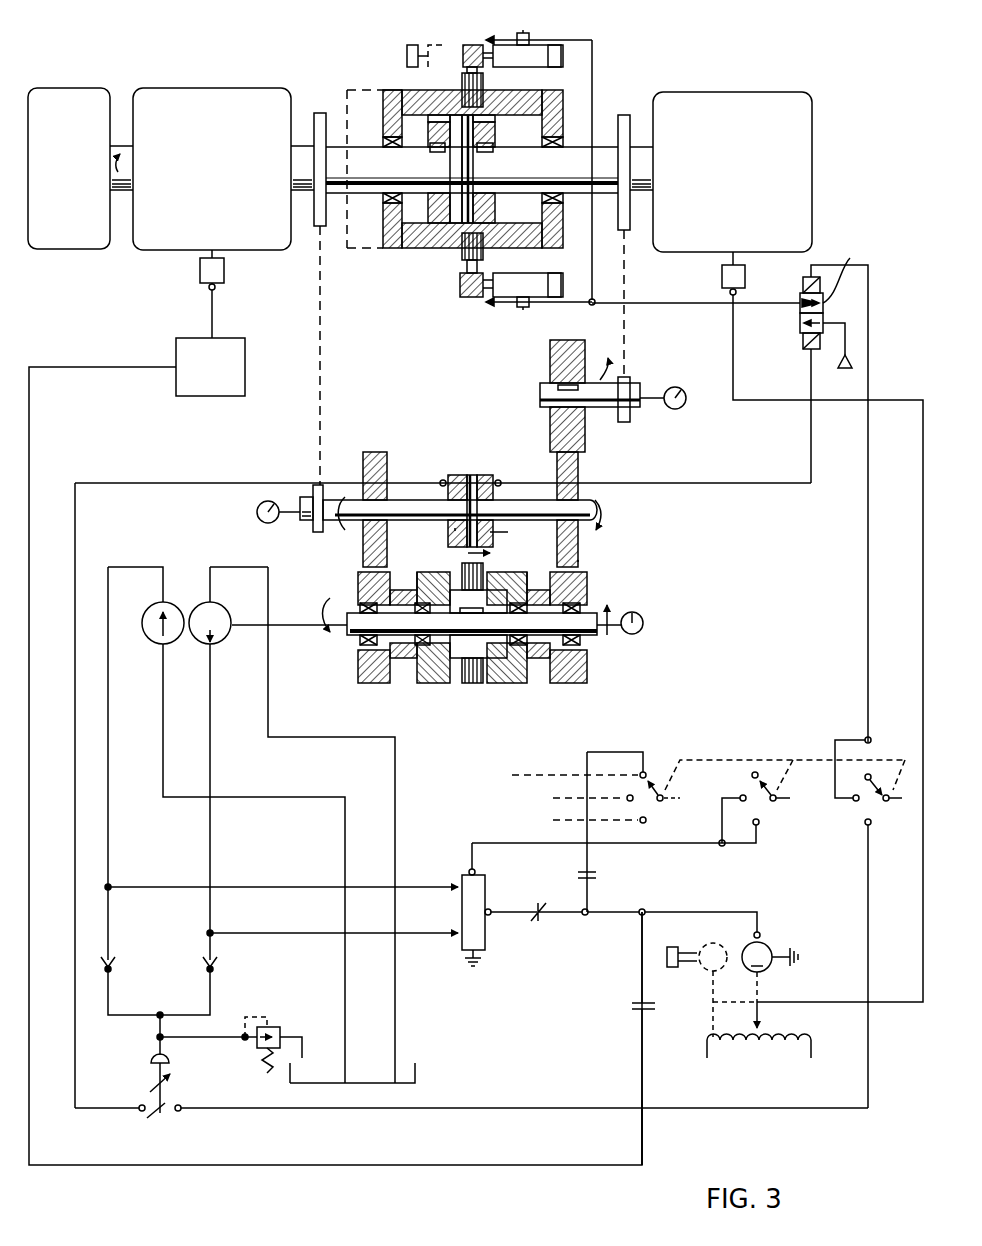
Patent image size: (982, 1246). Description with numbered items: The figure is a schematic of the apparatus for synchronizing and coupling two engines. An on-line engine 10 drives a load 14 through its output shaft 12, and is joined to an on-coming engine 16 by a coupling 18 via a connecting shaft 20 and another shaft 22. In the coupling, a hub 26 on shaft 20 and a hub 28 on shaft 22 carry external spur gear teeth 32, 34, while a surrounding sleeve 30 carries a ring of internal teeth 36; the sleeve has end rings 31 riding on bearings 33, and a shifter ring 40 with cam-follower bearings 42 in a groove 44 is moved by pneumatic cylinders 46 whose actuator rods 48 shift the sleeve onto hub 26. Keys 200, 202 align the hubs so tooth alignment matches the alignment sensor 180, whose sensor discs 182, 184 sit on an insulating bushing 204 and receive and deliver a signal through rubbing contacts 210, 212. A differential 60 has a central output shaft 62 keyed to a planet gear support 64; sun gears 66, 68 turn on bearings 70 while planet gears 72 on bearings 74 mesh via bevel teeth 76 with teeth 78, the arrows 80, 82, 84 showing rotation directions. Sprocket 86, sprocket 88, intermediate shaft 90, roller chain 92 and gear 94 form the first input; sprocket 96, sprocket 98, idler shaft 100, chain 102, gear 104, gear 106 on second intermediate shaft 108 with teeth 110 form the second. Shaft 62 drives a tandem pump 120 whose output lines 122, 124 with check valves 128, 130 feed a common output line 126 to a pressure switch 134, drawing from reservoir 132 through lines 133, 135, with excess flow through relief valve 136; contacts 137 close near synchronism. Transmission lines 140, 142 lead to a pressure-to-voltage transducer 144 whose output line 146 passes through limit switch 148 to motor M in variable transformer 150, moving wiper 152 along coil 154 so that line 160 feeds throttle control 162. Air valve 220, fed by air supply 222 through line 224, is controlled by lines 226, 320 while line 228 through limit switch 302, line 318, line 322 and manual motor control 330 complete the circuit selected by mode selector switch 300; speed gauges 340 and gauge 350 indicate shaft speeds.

The on-line engine 10 is at (189, 88).
The output shaft 12 is at (120, 145).
The load 14 is at (57, 88).
The on-coming engine 16 is at (718, 92).
The coupling 18 is at (516, 597).
The connecting shaft 20 is at (303, 145).
The shaft 22 is at (652, 145).
The hub 26 is at (428, 210).
The hub 28 is at (495, 160).
The sleeve 30 is at (402, 248).
The end rings 31 is at (383, 125).
The external spur gear teeth 32 is at (428, 136).
The bearings 33 is at (563, 142).
The external spur gear teeth 34 is at (495, 130).
The ring of teeth 36 is at (495, 212).
The shifter ring 40 is at (460, 285).
The cam-follower type bearings 42 is at (462, 88).
The groove 44 is at (462, 245).
The double-acting pneumatic cylinders 46 is at (563, 66).
The actuator rods 48 is at (496, 67).
The differential 60 is at (462, 643).
The central output shaft 62 is at (347, 648).
The planet gear support 64 is at (472, 683).
The sun gear 66 is at (402, 683).
The sun gear 68 is at (557, 683).
The bearings 70 is at (360, 605).
The bevel spur tooth planet gears 72 is at (532, 560).
The bearings 74 is at (455, 572).
The bevel teeth 76 is at (520, 625).
The teeth 78 is at (417, 572).
The arrow 80 is at (319, 612).
The arrows 82 is at (455, 528).
The arrow 84 is at (614, 640).
The chain sprocket 86 is at (321, 112).
The chain sprocket 88 is at (315, 532).
The intermediate shaft 90 is at (430, 520).
The roller chain 92 is at (317, 279).
The gear 94 is at (363, 462).
The sprocket 96 is at (624, 113).
The sprocket 98 is at (625, 423).
The idler shaft 100 is at (540, 392).
The chain 102 is at (624, 272).
The gear 104 is at (550, 358).
The gear 106 is at (580, 470).
The second intermediate shaft 108 is at (498, 553).
The teeth 110 is at (578, 563).
The tandem positive displacement hydraulic pump 120 is at (205, 582).
The output line 122 is at (108, 722).
The output line 124 is at (210, 722).
The common output line 126 is at (156, 1031).
The check valve 128 is at (114, 963).
The check valve 130 is at (204, 968).
The reservoir 132 is at (421, 1076).
The line 133 is at (343, 963).
The pressure switch 134 is at (150, 1068).
The line 135 is at (392, 996).
The relief valve 136 is at (277, 1030).
The contacts 137 is at (138, 1112).
The fluid pressure transmission line 140 is at (265, 887).
The transmission line 142 is at (265, 933).
The pressure-to-voltage transducer 144 is at (462, 948).
The electric output line 146 is at (505, 912).
The limit switch 148 is at (405, 56).
The variable transformer 150 is at (768, 1056).
The wiper 152 is at (760, 998).
The coil 154 is at (788, 1040).
The line 160 is at (923, 920).
The electrical-to-mechanical throttle control 162 is at (722, 279).
The alignment sensor 180 is at (478, 474).
The sensor disc 182 is at (465, 475).
The sensor disc 184 is at (503, 452).
The key 200 is at (441, 154).
The key 202 is at (493, 152).
The insulating bushing 204 is at (540, 523).
The rubbing contact 210 is at (441, 480).
The rubbing contact 212 is at (501, 480).
The electric-solenoid operated air valve 220 is at (803, 340).
The air supply 222 is at (849, 369).
The line 224 is at (692, 305).
The line 226 is at (868, 584).
The line 228 is at (605, 856).
The mode selector switch 300 is at (715, 758).
The limit switch 302 is at (587, 872).
The line 318 is at (184, 482).
The line 320 is at (713, 483).
The line 322 is at (640, 1060).
The manual motor control 330 is at (176, 348).
The speed indicator gauges 340 is at (685, 405).
The speed indicator gauge 350 is at (644, 622).